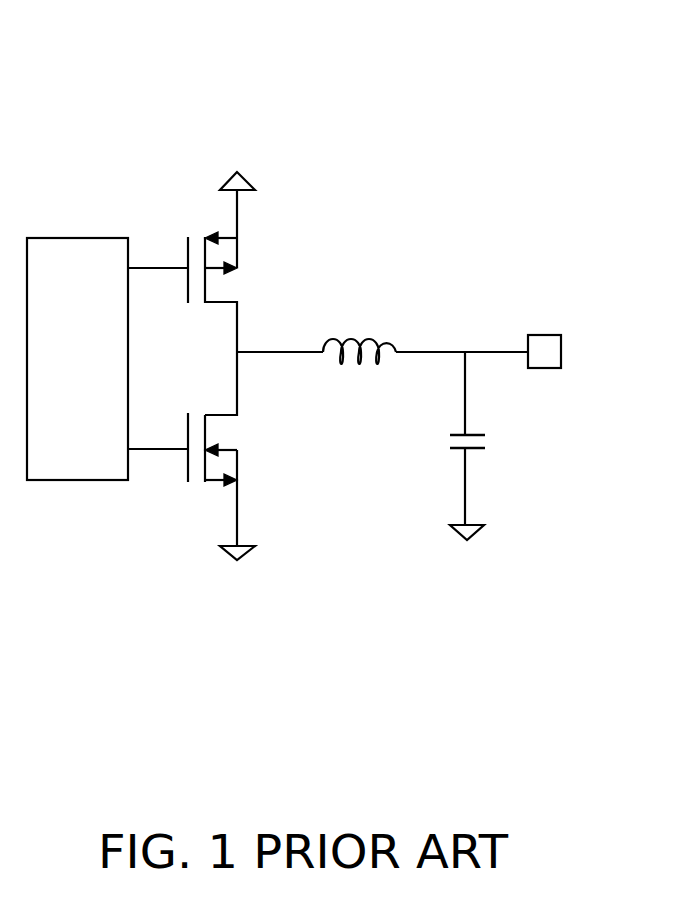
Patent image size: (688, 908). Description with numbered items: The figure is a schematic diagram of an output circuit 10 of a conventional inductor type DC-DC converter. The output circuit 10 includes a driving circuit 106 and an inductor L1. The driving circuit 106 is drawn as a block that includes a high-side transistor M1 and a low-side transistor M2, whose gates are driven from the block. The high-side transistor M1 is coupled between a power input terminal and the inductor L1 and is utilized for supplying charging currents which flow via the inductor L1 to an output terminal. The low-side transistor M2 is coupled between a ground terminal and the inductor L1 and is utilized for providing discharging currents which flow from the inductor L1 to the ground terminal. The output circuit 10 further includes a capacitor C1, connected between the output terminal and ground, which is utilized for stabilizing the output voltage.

The output circuit 10 is at (527, 88).
The driving circuit 106 is at (97, 372).
The high-side transistor M1 is at (240, 292).
The low-side transistor M2 is at (240, 449).
The inductor L1 is at (359, 331).
The capacitor C1 is at (486, 438).